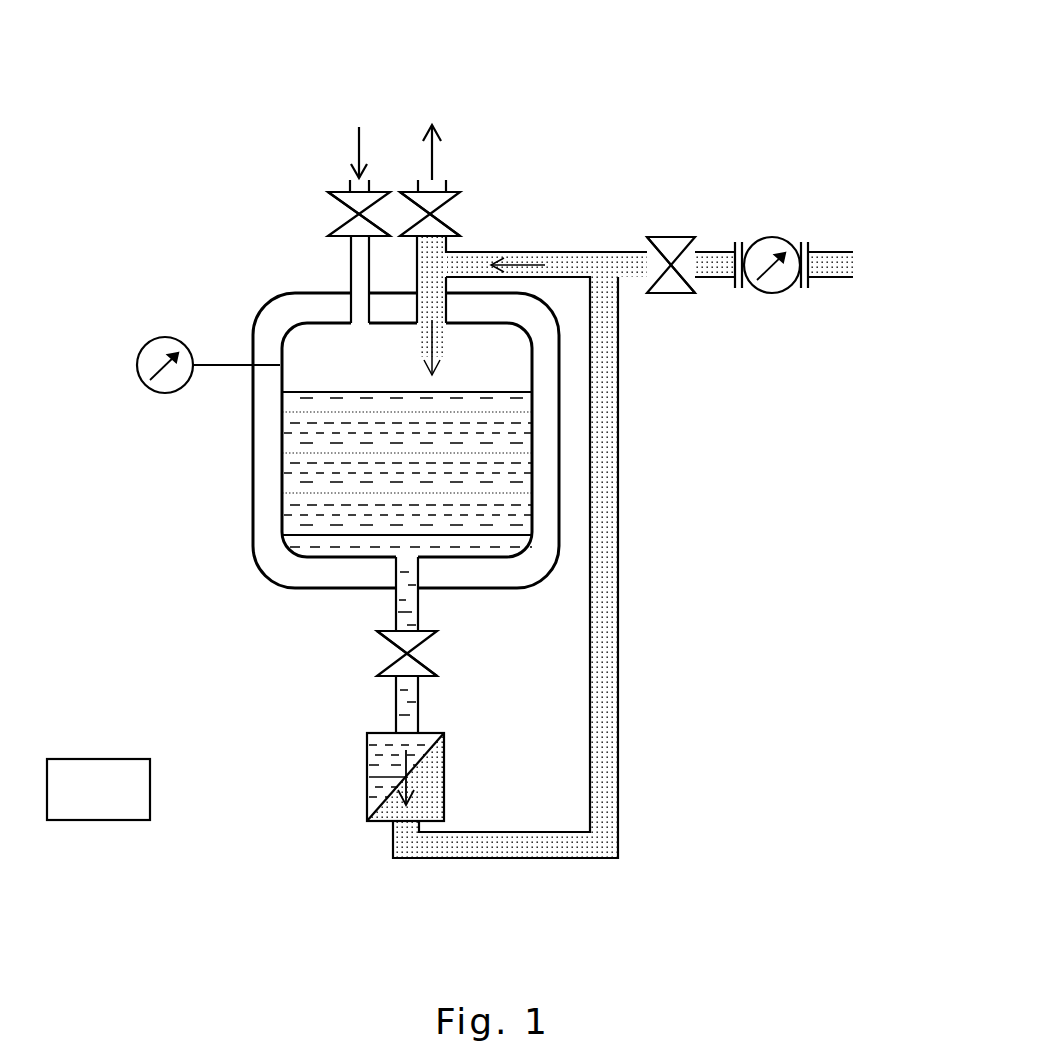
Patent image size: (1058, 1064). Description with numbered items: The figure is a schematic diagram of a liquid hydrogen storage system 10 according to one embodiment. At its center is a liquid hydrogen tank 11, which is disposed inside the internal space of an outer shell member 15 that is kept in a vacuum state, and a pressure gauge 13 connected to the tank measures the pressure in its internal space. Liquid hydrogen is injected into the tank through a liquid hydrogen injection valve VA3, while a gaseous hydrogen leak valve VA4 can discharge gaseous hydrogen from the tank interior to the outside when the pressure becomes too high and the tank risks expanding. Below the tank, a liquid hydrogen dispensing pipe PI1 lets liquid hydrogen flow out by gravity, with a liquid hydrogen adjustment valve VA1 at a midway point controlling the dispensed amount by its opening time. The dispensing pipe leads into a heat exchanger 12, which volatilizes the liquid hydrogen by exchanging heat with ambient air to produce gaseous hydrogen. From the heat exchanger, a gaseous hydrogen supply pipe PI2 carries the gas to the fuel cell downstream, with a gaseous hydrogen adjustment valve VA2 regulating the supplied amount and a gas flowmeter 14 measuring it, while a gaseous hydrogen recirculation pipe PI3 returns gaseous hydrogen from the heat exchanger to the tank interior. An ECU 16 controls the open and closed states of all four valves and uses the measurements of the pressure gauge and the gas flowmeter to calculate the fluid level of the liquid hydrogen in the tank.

The liquid hydrogen storage system 10 is at (282, 60).
The liquid hydrogen tank 11 is at (280, 518).
The heat exchanger 12 is at (367, 768).
The pressure gauge 13 is at (167, 337).
The gas flowmeter 14 is at (770, 238).
The outer shell member 15 is at (253, 447).
The electronic control unit 16 is at (118, 759).
The liquid hydrogen adjustment valve VA1 is at (383, 641).
The gaseous hydrogen adjustment valve VA2 is at (684, 240).
The liquid hydrogen injection valve VA3 is at (340, 204).
The gaseous hydrogen leak valve VA4 is at (452, 204).
The liquid hydrogen dispensing pipe PI1 is at (396, 705).
The gaseous hydrogen supply pipe PI2 is at (724, 280).
The gaseous hydrogen recirculation pipe PI3 is at (548, 252).